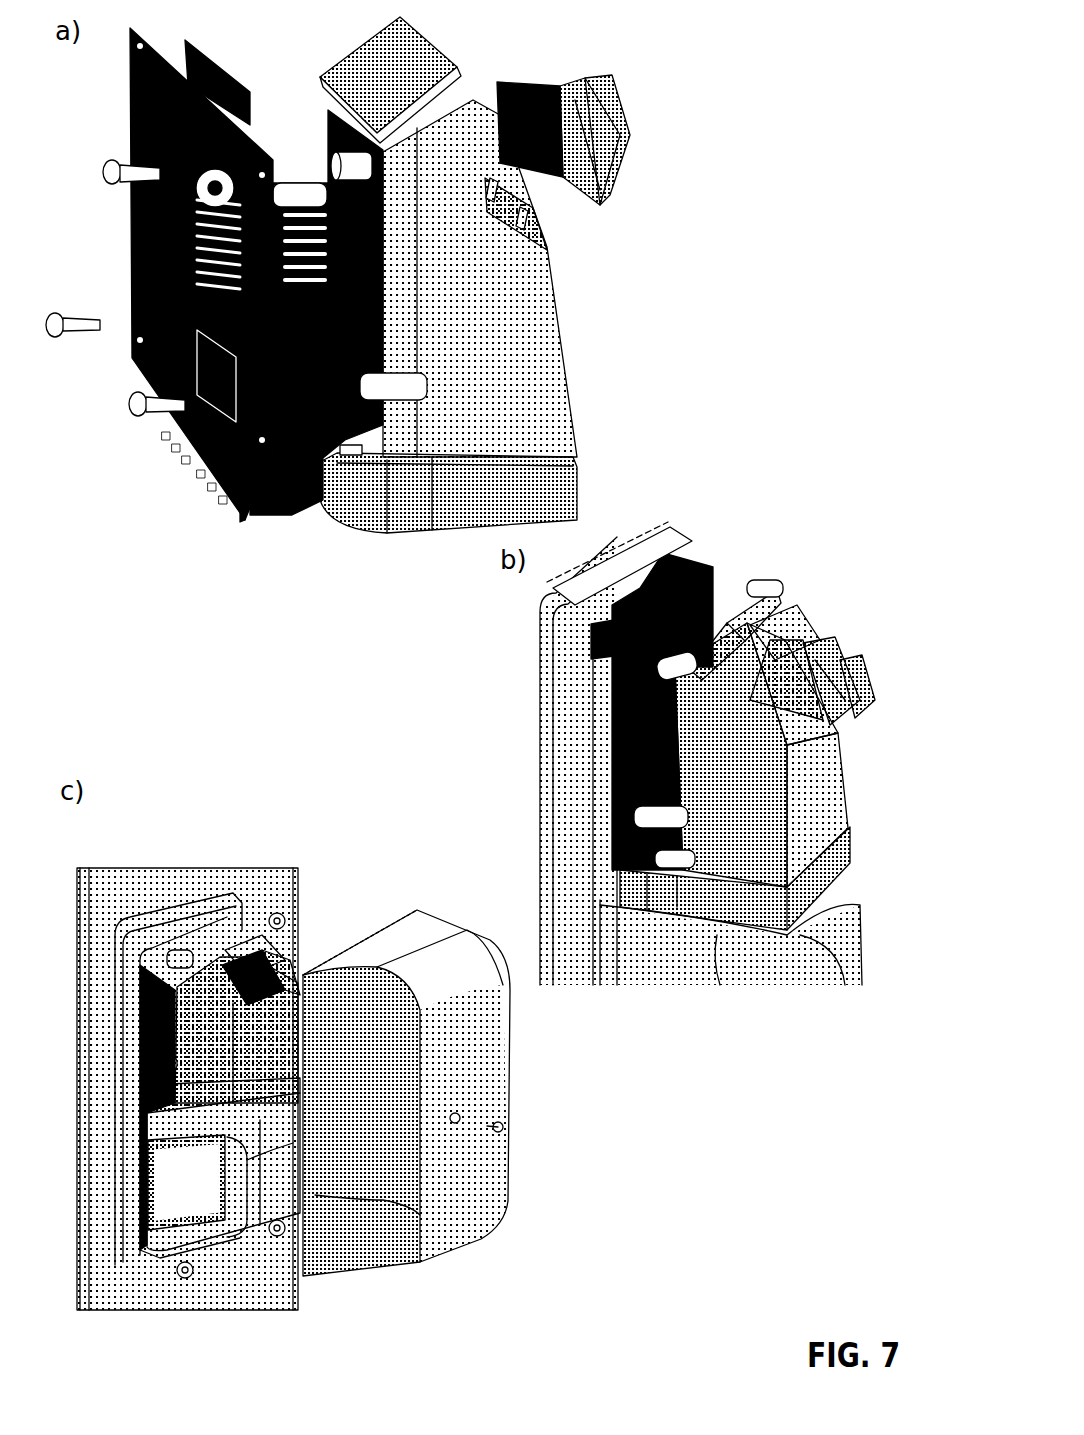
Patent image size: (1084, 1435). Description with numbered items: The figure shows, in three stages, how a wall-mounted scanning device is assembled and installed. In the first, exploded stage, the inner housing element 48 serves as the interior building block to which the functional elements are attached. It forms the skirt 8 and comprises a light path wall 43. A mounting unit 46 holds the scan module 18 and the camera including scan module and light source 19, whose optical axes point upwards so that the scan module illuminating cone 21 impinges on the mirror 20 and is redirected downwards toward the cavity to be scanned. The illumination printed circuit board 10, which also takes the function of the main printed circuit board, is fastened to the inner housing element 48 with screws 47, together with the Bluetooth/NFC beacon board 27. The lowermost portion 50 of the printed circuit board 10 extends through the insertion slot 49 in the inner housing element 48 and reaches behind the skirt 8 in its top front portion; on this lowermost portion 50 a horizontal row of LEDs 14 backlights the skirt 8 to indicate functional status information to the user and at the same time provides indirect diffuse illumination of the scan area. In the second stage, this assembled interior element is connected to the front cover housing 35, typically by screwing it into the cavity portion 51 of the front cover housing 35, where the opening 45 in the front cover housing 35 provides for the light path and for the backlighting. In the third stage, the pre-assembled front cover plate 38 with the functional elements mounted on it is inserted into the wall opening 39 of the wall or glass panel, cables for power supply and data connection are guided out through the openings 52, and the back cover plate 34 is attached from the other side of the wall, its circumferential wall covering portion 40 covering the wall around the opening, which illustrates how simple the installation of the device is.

The skirt 8 is at (360, 515).
The illumination printed circuit board 10 is at (155, 430).
The row of LEDs 14 is at (185, 477).
The scan module 18 is at (615, 135).
The camera including scan module and light source 19 is at (530, 130).
The mirror 20 is at (418, 55).
The scan module illuminating cone 21 is at (777, 620).
The Bluetooth/NFC beacon board 27 is at (216, 62).
The back cover plate 34 is at (473, 1073).
The front cover housing 35 is at (537, 690).
The pre-assembled front cover plate 38 is at (647, 557).
The wall opening 39 is at (113, 878).
The circumferential wall covering portion 40 is at (617, 537).
The light path wall 43 is at (460, 187).
The opening in front cover housing 45 is at (599, 643).
The mounting unit 46 is at (595, 137).
The screws 47 is at (130, 176).
The inner housing element 48 is at (540, 305).
The insertion slot 49 is at (345, 450).
The lowermost portion of printed circuit board 50 is at (260, 505).
The cavity portion of front cover housing 51 is at (850, 915).
The openings for cables 52 is at (203, 1243).